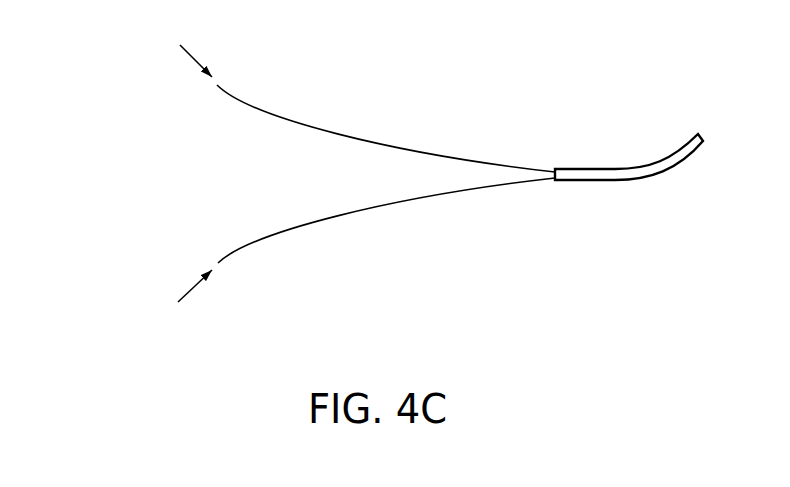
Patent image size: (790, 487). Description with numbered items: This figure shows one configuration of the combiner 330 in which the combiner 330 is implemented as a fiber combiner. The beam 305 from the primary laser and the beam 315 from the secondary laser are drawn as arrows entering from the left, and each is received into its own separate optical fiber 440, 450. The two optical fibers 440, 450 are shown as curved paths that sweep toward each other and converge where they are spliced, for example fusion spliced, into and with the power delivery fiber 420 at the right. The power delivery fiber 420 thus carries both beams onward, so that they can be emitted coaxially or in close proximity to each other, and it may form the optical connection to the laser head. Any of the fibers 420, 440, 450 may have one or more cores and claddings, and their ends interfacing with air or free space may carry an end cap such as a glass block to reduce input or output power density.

The combiner 330 is at (157, 143).
The beam 305 is at (196, 61).
The beam 315 is at (198, 287).
The optical fiber 440 is at (377, 142).
The optical fiber 450 is at (377, 205).
The power delivery fiber 420 is at (618, 181).